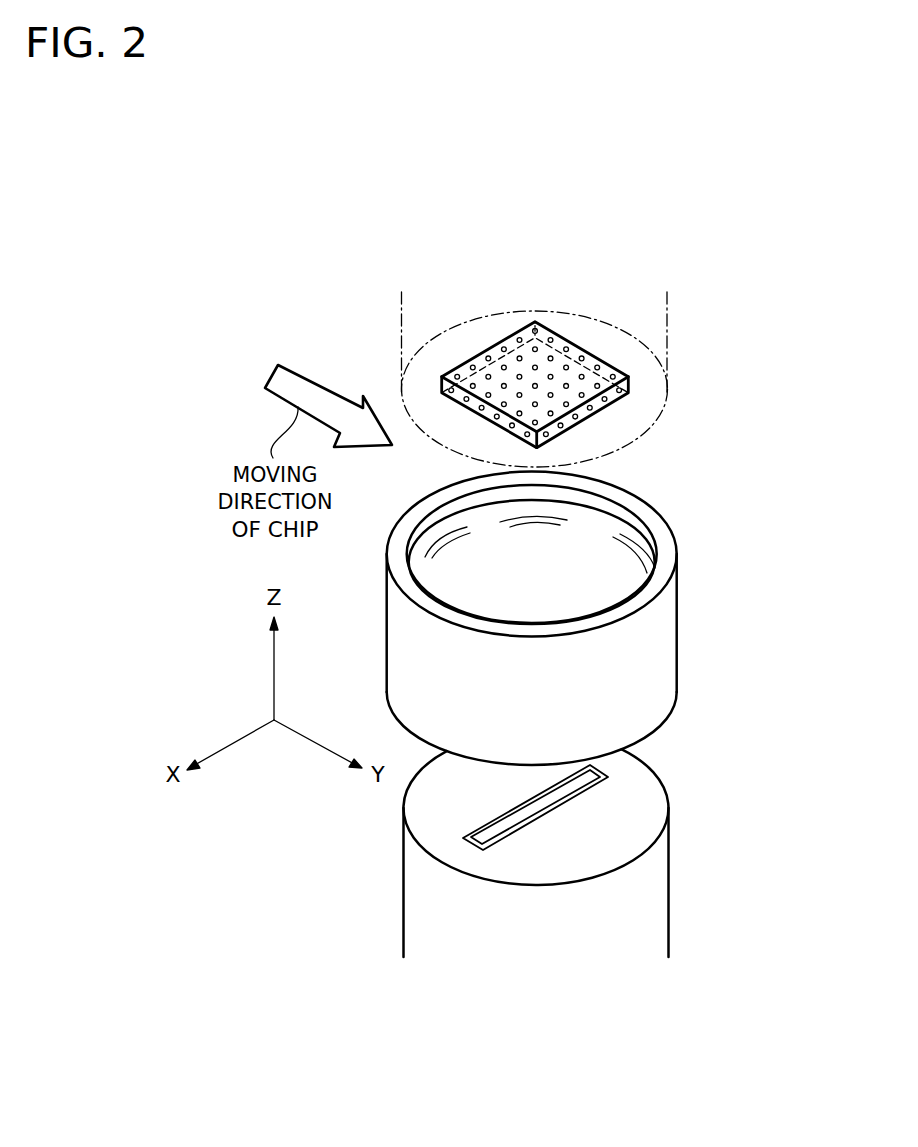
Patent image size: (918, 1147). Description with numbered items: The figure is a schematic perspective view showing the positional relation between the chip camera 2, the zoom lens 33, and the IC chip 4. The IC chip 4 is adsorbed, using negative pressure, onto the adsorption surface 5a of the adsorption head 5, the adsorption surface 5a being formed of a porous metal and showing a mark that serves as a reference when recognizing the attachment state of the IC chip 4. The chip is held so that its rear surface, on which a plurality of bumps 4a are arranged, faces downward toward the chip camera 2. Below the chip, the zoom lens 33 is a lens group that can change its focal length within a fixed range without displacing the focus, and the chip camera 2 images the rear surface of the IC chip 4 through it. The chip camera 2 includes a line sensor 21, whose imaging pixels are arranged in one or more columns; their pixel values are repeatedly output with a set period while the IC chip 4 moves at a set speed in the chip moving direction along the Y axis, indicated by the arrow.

The chip camera 2 is at (670, 850).
The line sensor 21 is at (480, 828).
The zoom lens 33 is at (677, 632).
The IC chip 4 is at (621, 373).
The bumps 4a is at (542, 431).
The adsorption head 5 is at (668, 330).
The adsorption surface 5a is at (560, 328).